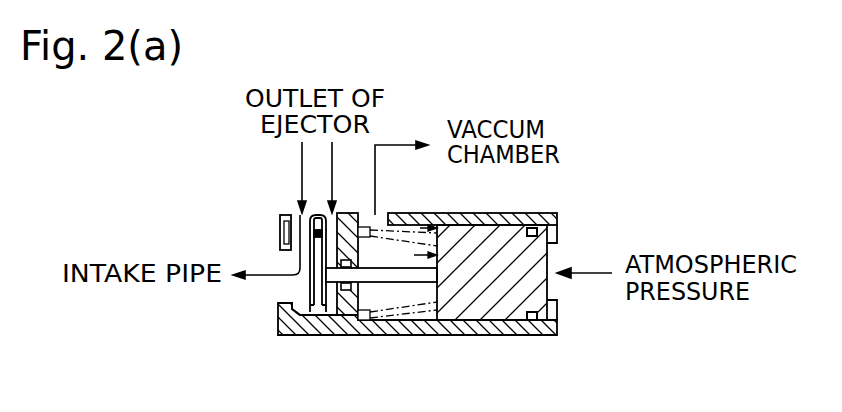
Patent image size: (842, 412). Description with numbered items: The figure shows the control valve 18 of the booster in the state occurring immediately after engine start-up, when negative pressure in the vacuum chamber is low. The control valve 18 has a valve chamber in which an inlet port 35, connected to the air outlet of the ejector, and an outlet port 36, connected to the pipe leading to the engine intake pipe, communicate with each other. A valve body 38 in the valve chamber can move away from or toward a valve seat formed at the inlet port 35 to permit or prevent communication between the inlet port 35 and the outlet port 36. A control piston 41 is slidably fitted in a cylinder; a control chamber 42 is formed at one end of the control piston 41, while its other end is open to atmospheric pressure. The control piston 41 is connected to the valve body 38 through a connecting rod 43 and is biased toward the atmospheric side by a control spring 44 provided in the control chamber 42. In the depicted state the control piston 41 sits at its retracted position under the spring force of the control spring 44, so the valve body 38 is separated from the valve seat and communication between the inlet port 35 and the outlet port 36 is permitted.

The control valve 18 is at (487, 213).
The inlet port 35 is at (291, 213).
The outlet port 36 is at (293, 303).
The valve body 38 is at (298, 336).
The control piston 41 is at (513, 262).
The control chamber 42 is at (403, 253).
The connecting rod 43 is at (385, 273).
The control spring 44 is at (436, 319).